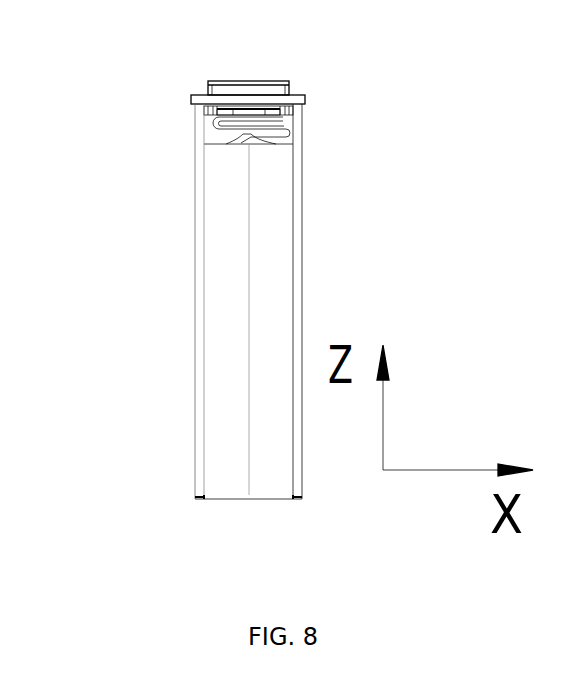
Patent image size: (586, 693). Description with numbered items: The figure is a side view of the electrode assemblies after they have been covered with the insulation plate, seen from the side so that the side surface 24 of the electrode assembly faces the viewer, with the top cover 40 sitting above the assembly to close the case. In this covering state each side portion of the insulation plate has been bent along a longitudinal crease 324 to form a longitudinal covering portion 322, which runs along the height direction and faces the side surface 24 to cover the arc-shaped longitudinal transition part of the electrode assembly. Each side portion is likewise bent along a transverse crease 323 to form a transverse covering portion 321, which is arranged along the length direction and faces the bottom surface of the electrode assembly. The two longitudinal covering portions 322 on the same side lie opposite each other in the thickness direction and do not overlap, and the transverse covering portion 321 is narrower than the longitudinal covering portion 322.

The top cover 40 is at (294, 96).
The side surface 24 is at (277, 227).
The longitudinal crease 324 is at (197, 282).
The longitudinal covering portion 322 is at (202, 384).
The transverse crease 323 is at (196, 499).
The transverse covering portion 321 is at (209, 502).